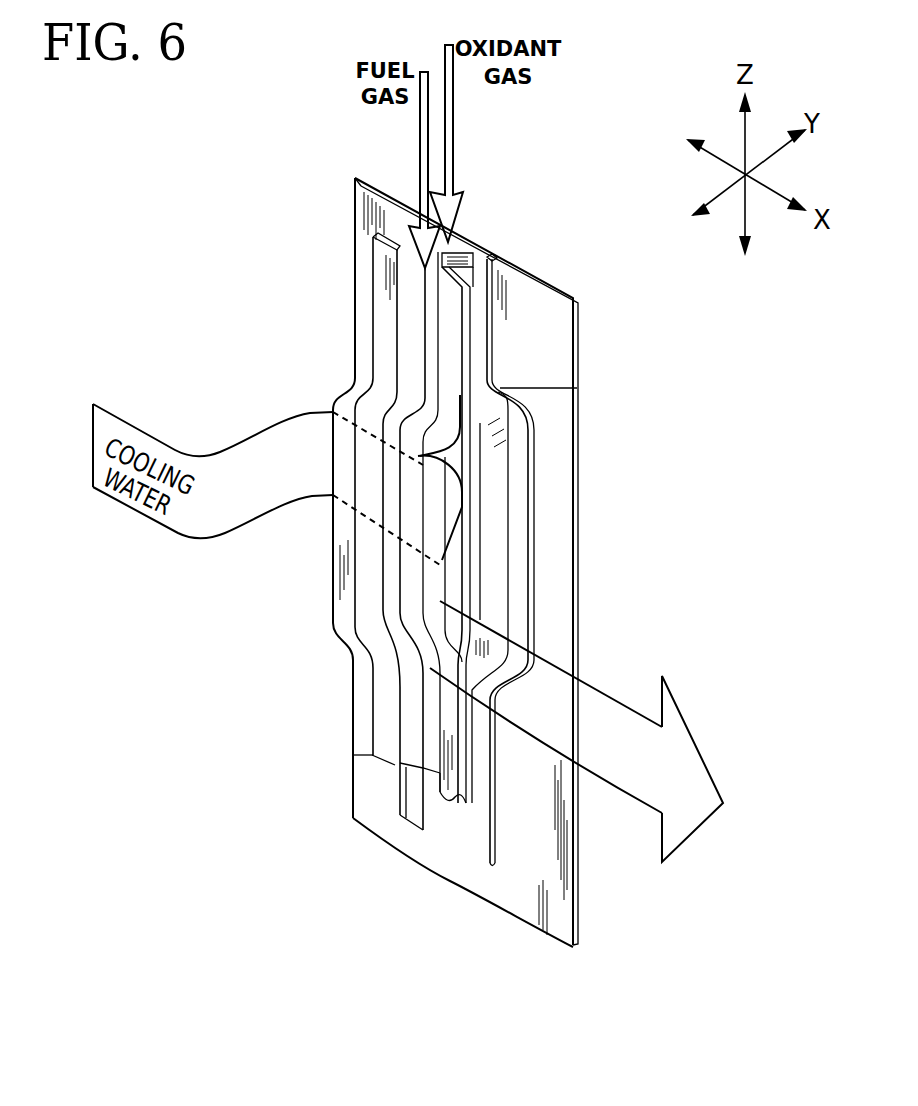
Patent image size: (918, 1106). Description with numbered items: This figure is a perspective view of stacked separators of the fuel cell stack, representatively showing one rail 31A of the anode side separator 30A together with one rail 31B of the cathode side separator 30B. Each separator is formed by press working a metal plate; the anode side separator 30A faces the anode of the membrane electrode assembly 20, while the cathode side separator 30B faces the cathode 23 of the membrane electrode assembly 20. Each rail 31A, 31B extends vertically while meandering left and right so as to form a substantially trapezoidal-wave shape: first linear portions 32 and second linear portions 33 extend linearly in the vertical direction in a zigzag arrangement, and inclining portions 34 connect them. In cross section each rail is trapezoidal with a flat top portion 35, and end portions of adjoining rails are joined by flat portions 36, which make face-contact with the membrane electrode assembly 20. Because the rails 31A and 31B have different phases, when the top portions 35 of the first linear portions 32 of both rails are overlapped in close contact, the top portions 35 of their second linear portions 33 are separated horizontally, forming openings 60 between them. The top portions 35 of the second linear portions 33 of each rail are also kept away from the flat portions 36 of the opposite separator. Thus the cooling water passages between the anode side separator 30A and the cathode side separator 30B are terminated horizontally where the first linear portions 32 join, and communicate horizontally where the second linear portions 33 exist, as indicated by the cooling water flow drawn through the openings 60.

The membrane electrode assembly 20 is at (576, 300).
The cathode 23 is at (553, 320).
The anode side separator 30A is at (368, 262).
The cathode side separator 30B is at (503, 278).
The rail 31A is at (408, 305).
The rail 31B is at (455, 235).
The first linear portion 32 is at (408, 347).
The second linear portion 33 is at (372, 582).
The inclining portion 34 is at (372, 378).
The top portion 35 is at (432, 838).
The flat portion 36 is at (387, 722).
The opening 60 is at (470, 456).